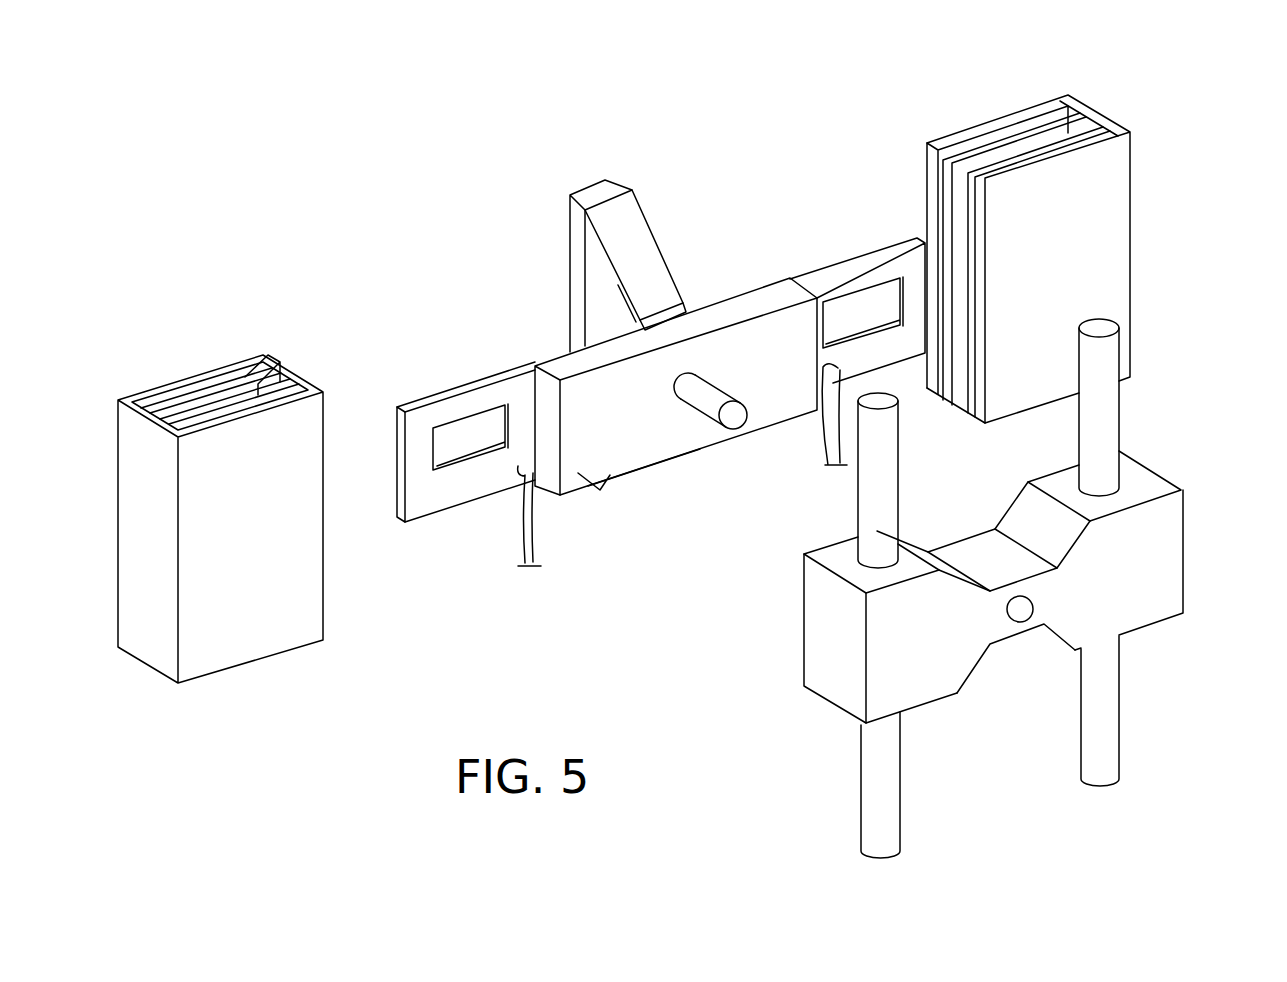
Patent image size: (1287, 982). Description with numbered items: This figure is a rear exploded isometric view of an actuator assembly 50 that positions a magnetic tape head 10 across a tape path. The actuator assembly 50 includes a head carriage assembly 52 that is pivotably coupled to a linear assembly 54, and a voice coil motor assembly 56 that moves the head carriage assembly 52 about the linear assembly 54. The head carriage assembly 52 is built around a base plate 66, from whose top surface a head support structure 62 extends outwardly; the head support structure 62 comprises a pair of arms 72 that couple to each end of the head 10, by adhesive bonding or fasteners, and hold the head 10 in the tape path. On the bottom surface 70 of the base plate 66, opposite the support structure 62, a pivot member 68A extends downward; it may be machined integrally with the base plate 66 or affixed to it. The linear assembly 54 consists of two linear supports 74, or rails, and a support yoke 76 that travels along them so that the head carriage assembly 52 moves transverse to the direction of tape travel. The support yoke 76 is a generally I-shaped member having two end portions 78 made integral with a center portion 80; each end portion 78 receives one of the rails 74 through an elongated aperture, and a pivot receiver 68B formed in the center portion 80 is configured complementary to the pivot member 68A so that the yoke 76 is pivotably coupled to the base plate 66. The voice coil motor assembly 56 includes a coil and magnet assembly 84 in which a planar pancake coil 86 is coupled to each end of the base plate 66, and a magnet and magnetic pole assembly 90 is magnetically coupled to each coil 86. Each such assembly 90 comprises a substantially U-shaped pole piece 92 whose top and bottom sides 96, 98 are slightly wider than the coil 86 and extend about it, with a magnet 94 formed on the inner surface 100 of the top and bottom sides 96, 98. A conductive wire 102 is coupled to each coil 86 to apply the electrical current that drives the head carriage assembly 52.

The magnetic tape head 10 is at (570, 238).
The actuator assembly 50 is at (430, 225).
The head carriage assembly 52 is at (740, 150).
The linear assembly 54 is at (763, 651).
The voice coil motor assembly 56 is at (82, 613).
The head support structure 62 is at (657, 233).
The base plate 66 is at (600, 490).
The pivot member 68A is at (742, 416).
The pivot receiver 68B is at (1021, 622).
The bottom surface 70 is at (637, 442).
The arms 72 is at (648, 266).
The linear supports 74 is at (853, 820).
The support yoke 76 is at (1043, 735).
The end portions 78 is at (1170, 612).
The center portion 80 is at (986, 547).
The coil and magnet assembly 84 is at (1160, 137).
The coil 86 is at (856, 270).
The magnet and magnetic pole assembly 90 is at (263, 658).
The pole piece 92 is at (1105, 231).
The magnet 94 is at (241, 394).
The top side 96 is at (983, 125).
The bottom side 98 is at (1040, 132).
The inner surface 100 is at (188, 396).
The wire 102 is at (821, 453).